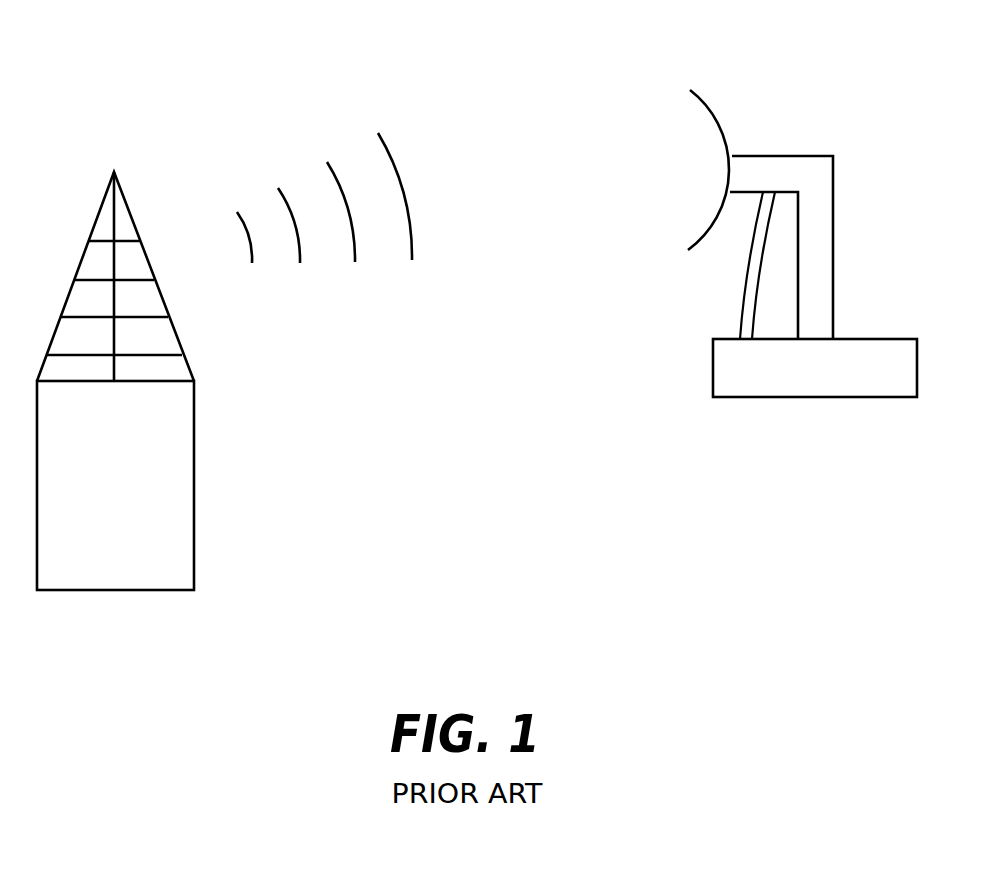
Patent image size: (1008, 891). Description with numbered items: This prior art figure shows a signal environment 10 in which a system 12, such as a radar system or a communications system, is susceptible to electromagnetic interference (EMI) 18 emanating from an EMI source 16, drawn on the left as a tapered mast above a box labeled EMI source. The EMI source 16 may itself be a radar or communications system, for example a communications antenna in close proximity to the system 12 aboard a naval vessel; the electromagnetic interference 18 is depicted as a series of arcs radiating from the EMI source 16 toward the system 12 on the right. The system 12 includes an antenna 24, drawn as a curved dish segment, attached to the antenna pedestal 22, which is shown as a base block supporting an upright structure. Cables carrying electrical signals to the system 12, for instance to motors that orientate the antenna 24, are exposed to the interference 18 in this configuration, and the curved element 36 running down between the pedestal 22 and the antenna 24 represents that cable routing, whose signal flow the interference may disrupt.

The signal environment 10 is at (248, 100).
The system 12 is at (787, 123).
The EMI source 16 is at (102, 558).
The electromagnetic interference (EMI) 18 is at (325, 258).
The antenna pedestal 22 is at (778, 377).
The antenna 24 is at (710, 115).
The gasket / contact member 36 is at (747, 300).